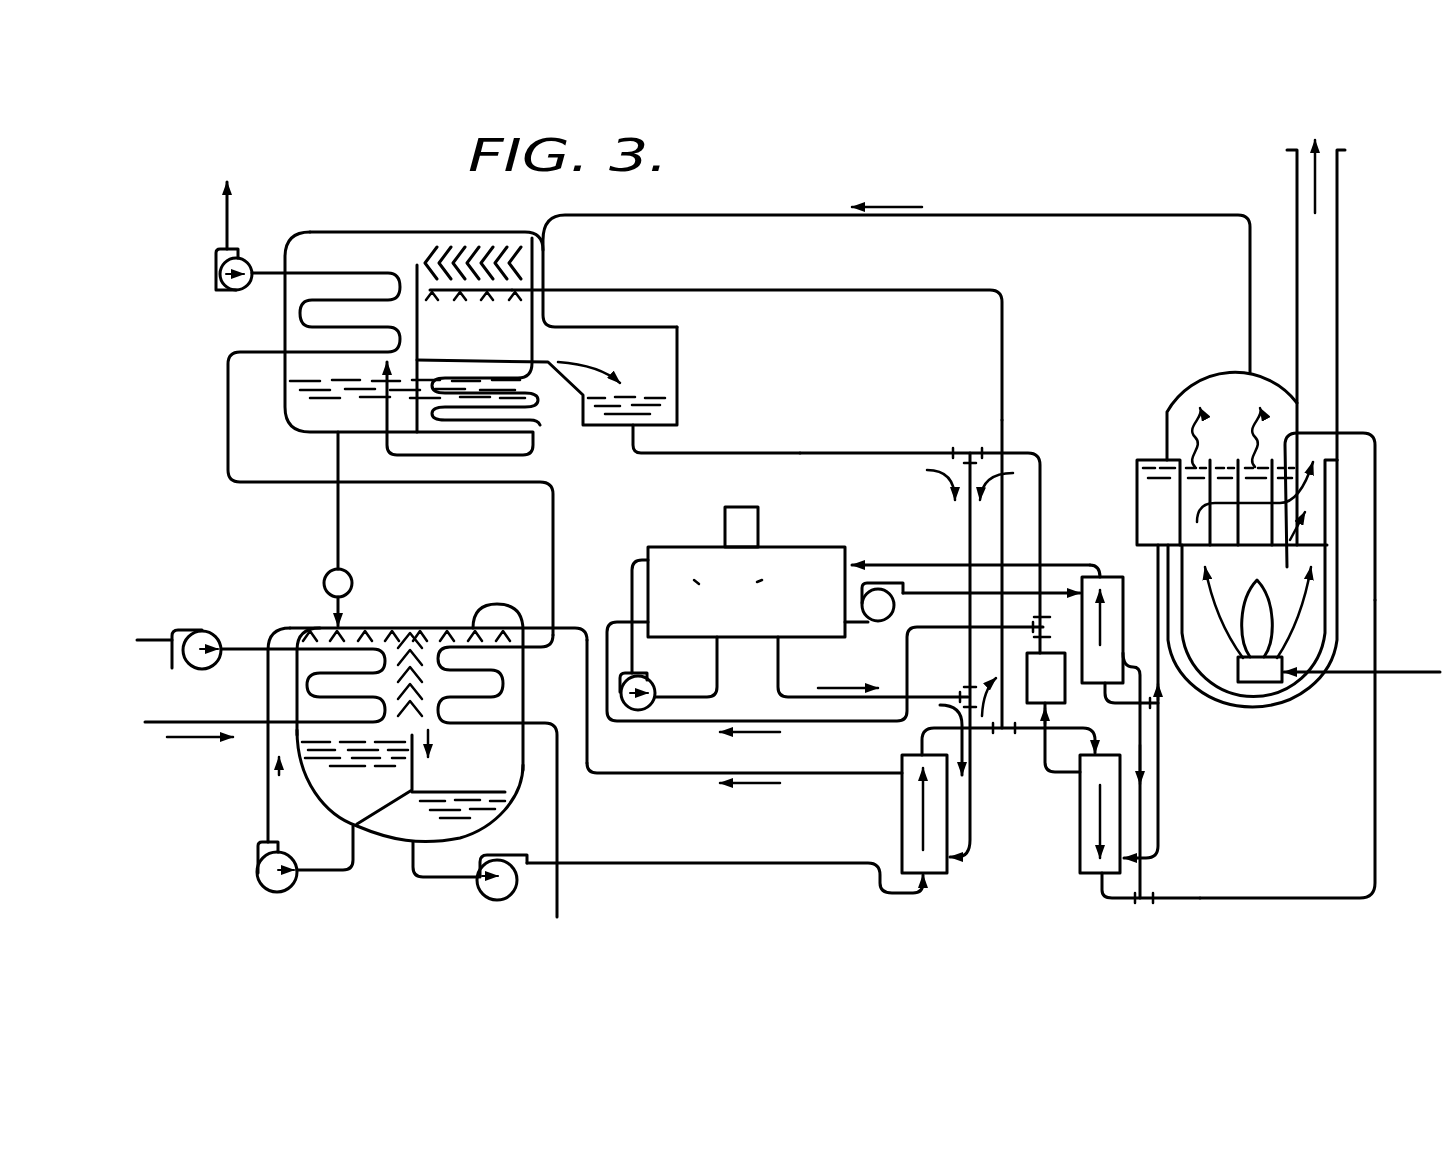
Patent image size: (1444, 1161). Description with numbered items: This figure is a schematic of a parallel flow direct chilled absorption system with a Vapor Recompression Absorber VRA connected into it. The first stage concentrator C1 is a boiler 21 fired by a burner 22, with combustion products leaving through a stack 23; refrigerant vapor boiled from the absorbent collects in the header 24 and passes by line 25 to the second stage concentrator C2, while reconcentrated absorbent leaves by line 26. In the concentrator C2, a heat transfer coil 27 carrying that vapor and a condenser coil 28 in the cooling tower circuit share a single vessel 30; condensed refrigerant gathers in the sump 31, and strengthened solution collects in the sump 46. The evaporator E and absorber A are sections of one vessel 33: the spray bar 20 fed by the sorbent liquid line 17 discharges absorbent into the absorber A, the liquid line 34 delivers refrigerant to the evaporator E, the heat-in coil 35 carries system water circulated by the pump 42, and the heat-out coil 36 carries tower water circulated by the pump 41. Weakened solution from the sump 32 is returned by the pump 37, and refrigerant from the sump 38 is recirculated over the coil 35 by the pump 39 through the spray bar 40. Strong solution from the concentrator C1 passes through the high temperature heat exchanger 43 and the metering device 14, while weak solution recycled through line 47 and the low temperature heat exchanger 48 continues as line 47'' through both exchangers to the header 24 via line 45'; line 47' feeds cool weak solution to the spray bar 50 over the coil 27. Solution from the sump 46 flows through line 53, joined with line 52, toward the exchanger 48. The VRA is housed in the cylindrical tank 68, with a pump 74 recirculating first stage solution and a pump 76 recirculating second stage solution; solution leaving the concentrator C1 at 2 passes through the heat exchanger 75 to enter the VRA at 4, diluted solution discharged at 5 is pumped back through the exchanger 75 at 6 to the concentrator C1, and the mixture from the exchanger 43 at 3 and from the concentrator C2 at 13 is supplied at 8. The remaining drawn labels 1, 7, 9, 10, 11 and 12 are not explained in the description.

The absorption refrigeration system 1 is at (1333, 920).
The first stage solution delivery point 2 is at (1161, 630).
The solution point from high temperature heat exchanger 3 is at (1062, 755).
The VRA discharge inlet point 4 is at (955, 570).
The first stage solution collection point 5 is at (844, 624).
The heat exchanger return point 6 is at (1111, 640).
The return pipe 7 is at (1142, 814).
The VRA sump supply point 8 is at (825, 646).
The controller terminal 9 is at (871, 658).
The dilute solution pipe 10 is at (744, 764).
The absorber outlet pipe 11 is at (455, 859).
The condenser spray pipe 12 is at (757, 344).
The second stage solution point 13 is at (925, 540).
The metering device 14 is at (1065, 697).
The sorbent liquid line 17 is at (586, 687).
The spray bar 20 is at (504, 601).
The boiler 21 is at (1345, 565).
The burner 22 is at (1255, 676).
The stack 23 is at (1340, 317).
The header 24 is at (1218, 402).
The line 25 is at (1065, 214).
The line 26 is at (1163, 773).
The heat transfer coil 27 is at (547, 405).
The refrigerant condenser coil 28 is at (298, 312).
The vessel 30 is at (357, 230).
The sump 31 is at (317, 418).
The sump of absorber section 32 is at (393, 829).
The evaporator-absorber vessel 33 is at (490, 810).
The liquid line 34 is at (340, 520).
The heat-in coil 35 is at (307, 688).
The heat-out coil 36 is at (447, 727).
The pump 37 is at (488, 884).
The sump of evaporator section 38 is at (332, 793).
The pump 39 is at (273, 880).
The spray bar 40 is at (318, 626).
The pump 41 is at (218, 292).
The pump 42 is at (184, 662).
The high temperature heat exchanger 43 is at (1090, 848).
The line 45' is at (1287, 769).
The sump 46 is at (667, 407).
The line 47 is at (725, 883).
The line 47' is at (1042, 538).
The continuing line 47'' is at (1008, 757).
The low temperature heat exchanger 48 is at (900, 826).
The spray bar 50 is at (512, 289).
The line 52 is at (1043, 553).
The line 53 is at (788, 450).
The cylindrical tank 68 is at (746, 572).
The pump 74 is at (891, 610).
The heat exchanger 75 is at (1124, 585).
The pump 76 is at (652, 690).
The absorber A is at (532, 772).
The evaporator E is at (328, 608).
The first stage concentrator C1 is at (1225, 375).
The second stage concentrator C2 is at (468, 228).
The Vapor Recompression Absorber VRA is at (685, 545).